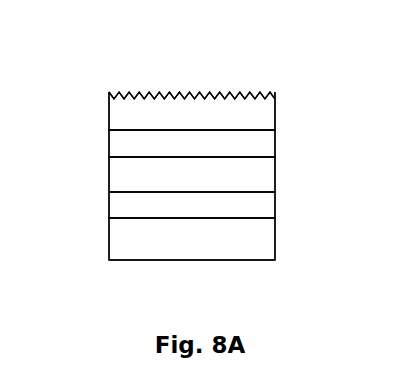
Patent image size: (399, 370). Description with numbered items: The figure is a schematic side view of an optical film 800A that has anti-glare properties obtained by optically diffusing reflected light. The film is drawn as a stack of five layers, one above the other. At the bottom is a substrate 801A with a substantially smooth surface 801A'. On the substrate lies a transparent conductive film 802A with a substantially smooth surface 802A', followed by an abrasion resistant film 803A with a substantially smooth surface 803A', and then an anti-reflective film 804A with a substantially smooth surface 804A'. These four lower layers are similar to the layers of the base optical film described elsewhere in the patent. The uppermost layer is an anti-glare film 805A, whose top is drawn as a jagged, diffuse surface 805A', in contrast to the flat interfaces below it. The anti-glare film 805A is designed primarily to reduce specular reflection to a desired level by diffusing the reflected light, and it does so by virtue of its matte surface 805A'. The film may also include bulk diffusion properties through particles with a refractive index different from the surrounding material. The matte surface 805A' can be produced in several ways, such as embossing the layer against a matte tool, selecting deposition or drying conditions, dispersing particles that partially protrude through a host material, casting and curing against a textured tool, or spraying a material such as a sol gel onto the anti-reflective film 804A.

The optical film 800A is at (296, 57).
The anti-glare film 805A is at (234, 111).
The anti-reflective film 804A is at (234, 143).
The abrasion resistant film 803A is at (232, 174).
The transparent conductive film 802A is at (232, 205).
The substrate 801A is at (232, 239).
The diffuse surface 805A' is at (170, 66).
The substantially smooth surface 804A' is at (150, 148).
The substantially smooth surface 803A' is at (155, 174).
The substantially smooth surface 802A' is at (150, 207).
The substantially smooth surface 801A' is at (152, 238).